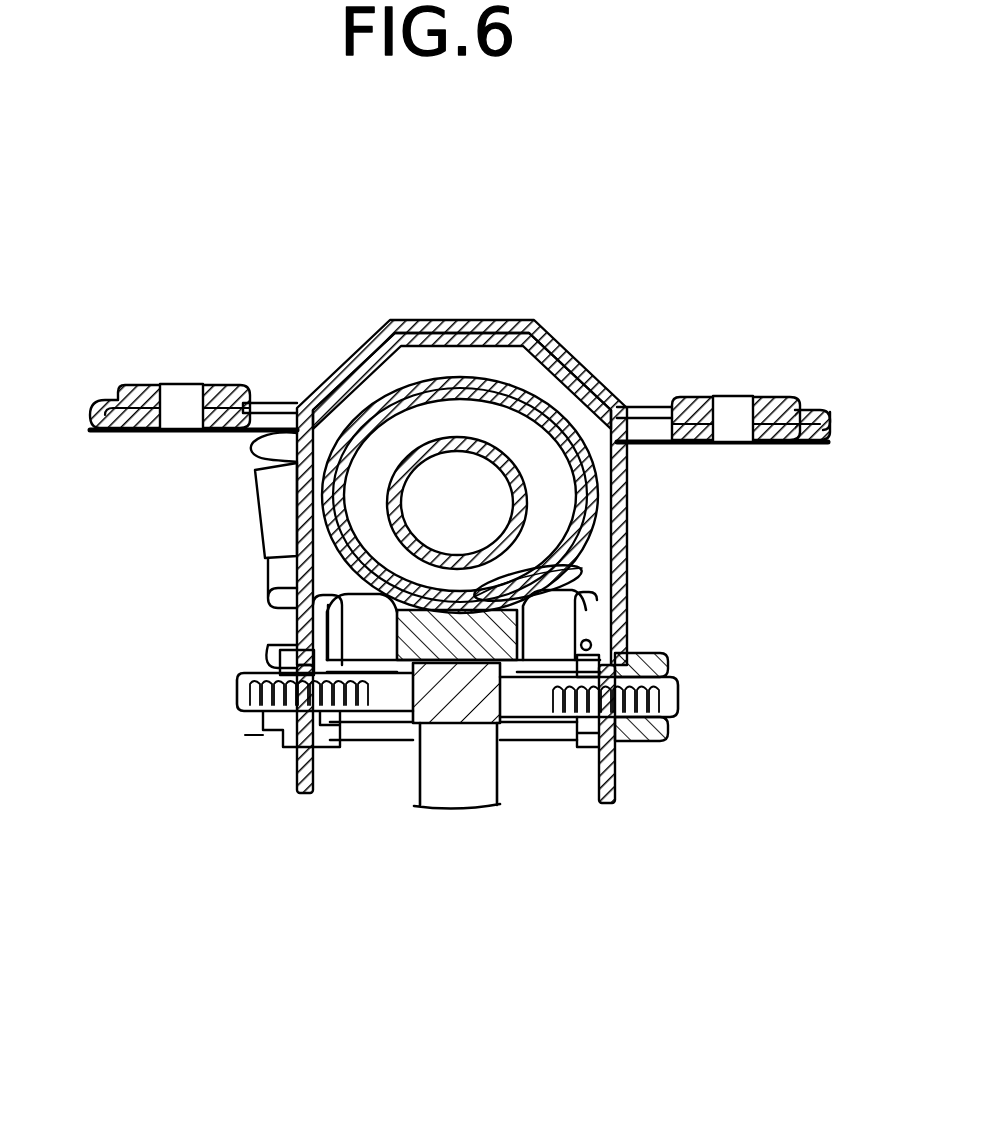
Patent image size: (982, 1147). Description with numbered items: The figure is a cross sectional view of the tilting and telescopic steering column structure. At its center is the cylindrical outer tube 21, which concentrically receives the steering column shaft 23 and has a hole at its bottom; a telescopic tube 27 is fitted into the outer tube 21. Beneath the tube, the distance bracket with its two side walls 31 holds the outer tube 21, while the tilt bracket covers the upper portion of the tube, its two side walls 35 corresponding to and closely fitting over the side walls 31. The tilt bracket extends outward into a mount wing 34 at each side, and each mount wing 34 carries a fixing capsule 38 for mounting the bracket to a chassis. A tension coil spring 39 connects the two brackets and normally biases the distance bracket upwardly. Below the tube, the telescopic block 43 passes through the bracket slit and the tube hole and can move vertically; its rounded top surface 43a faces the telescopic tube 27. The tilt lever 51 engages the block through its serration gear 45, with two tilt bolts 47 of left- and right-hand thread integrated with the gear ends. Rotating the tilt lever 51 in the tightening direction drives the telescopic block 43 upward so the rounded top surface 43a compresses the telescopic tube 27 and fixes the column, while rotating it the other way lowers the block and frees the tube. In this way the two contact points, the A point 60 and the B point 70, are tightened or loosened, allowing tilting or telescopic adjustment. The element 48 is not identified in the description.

The outer tube 21 is at (377, 400).
The telescopic tube 27 is at (466, 383).
The steering column shaft 23 is at (495, 455).
The mount wing 34 is at (270, 400).
The fixing capsule 38 is at (124, 386).
The tension coil spring 39 is at (258, 466).
The side wall of tilt bracket 35 is at (297, 628).
The side wall of distance bracket 31 is at (297, 643).
The telescopic block 43 is at (617, 598).
The rounded top surface 43a is at (674, 560).
The B point 70 is at (585, 568).
The tilt bolt 47 is at (384, 705).
The tilt lever 51 is at (500, 802).
The serration gear 45 is at (538, 722).
The bracket 48 is at (245, 740).
The A point 60 is at (623, 757).